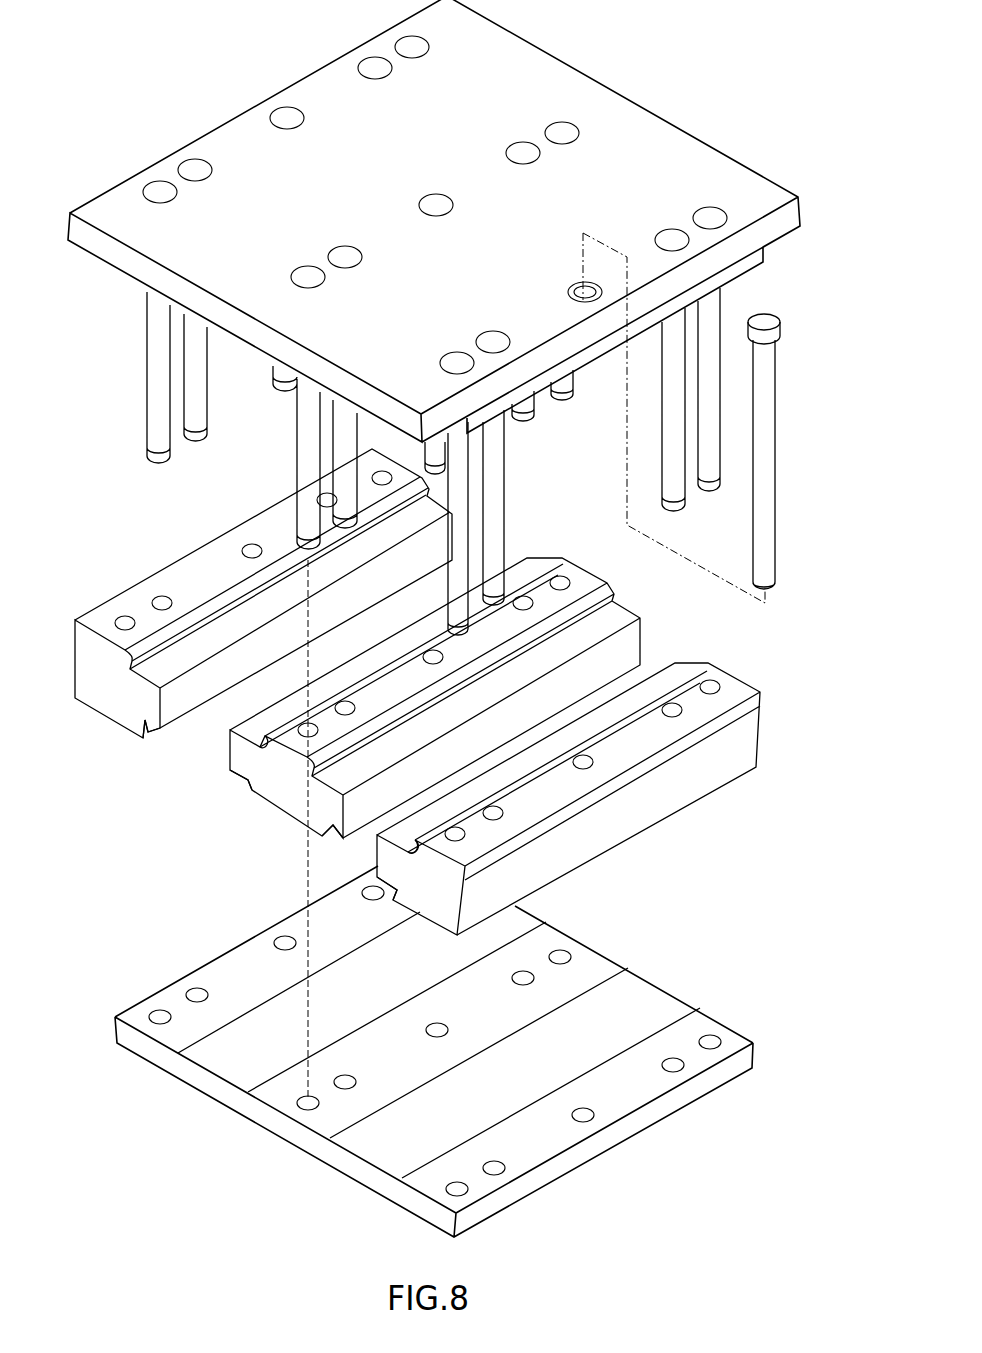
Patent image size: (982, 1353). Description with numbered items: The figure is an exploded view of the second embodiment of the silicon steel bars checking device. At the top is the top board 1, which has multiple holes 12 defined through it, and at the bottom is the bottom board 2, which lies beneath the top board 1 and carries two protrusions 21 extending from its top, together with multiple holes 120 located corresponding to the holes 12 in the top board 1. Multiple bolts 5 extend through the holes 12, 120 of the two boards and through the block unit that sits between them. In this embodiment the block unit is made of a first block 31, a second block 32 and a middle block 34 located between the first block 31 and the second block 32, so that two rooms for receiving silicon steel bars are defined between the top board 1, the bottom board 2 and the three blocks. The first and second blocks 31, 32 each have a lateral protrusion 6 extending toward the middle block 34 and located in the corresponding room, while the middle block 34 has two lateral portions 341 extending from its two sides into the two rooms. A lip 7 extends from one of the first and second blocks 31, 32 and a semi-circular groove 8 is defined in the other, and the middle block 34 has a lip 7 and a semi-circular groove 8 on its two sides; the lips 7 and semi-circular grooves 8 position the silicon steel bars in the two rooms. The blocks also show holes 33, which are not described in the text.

The top board 1 is at (640, 140).
The holes 12 is at (584, 292).
The bolts 5 is at (757, 545).
The first block 31 is at (110, 714).
The middle block 34 is at (292, 812).
The second block 32 is at (755, 745).
The fastening hole 33 is at (123, 624).
The lateral portions 341 is at (228, 775).
The lip 7 is at (115, 680).
The lateral protrusion 6 is at (150, 732).
The semi-circular groove 8 is at (258, 744).
The bottom board 2 is at (680, 1098).
The protrusion 21 is at (215, 1073).
The holes 120 is at (585, 1115).